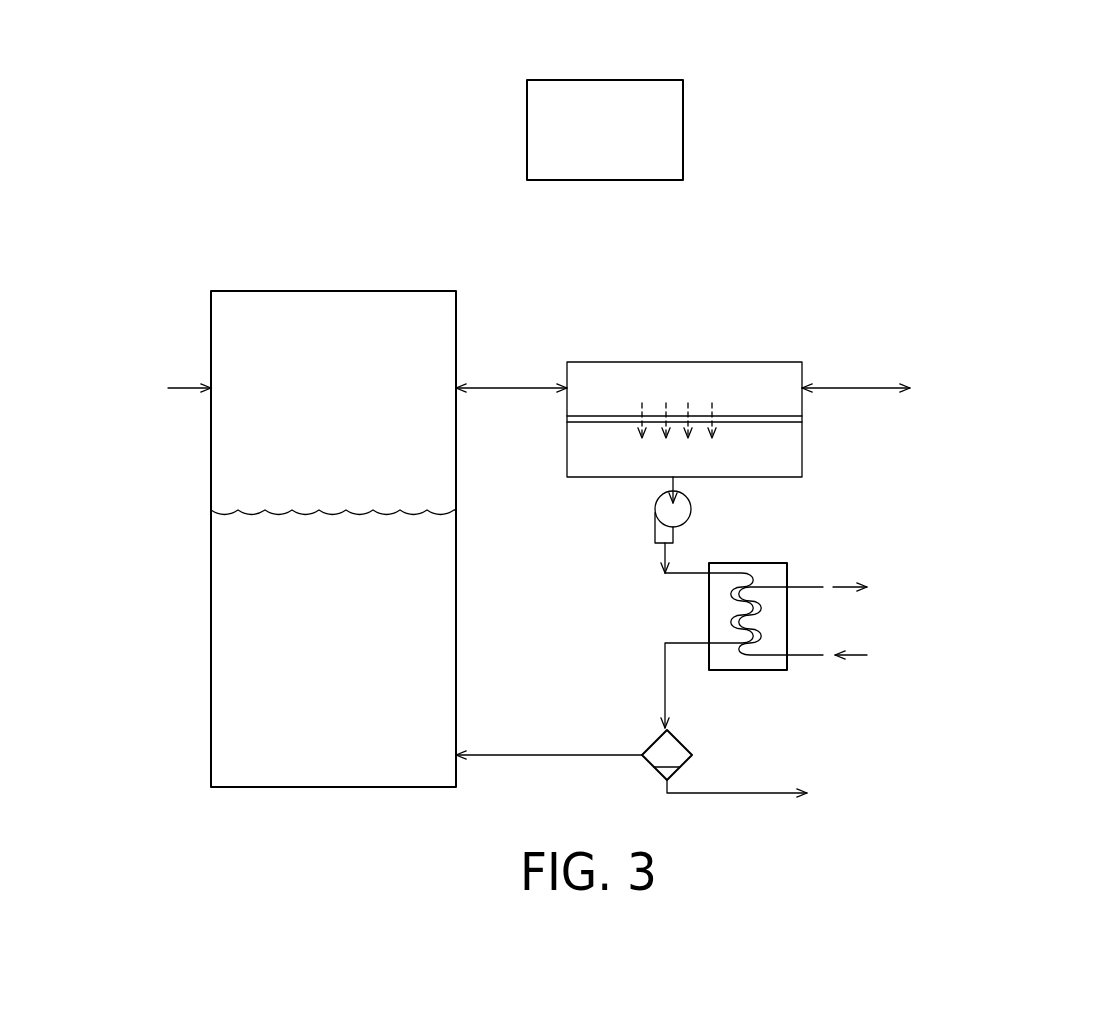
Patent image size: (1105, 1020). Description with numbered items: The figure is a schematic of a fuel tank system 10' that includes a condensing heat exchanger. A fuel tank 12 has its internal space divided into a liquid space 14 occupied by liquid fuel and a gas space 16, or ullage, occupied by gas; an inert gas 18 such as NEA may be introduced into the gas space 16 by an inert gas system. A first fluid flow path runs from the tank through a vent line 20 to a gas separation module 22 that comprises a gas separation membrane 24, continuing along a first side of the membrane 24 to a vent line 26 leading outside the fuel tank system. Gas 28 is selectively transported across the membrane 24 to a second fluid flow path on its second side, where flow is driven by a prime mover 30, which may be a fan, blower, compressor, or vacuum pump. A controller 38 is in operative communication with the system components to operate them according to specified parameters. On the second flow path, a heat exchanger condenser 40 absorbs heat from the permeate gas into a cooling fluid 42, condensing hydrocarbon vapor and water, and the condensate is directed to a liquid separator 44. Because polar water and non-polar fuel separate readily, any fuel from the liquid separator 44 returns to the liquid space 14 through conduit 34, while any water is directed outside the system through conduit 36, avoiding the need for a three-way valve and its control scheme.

The fuel tank system 10' is at (1031, 82).
The fuel tank 12 is at (395, 290).
The liquid space 14 is at (265, 657).
The gas space 16 is at (313, 318).
The inert gas 18 is at (183, 387).
The vent line 20 is at (505, 387).
The gas separation module 22 is at (617, 361).
The gas separation membrane 24 is at (740, 416).
The vent line 26 is at (857, 385).
The gas 28 is at (688, 410).
The prime mover 30 is at (692, 510).
The conduit 34 is at (542, 753).
The conduit 36 is at (768, 795).
The controller 38 is at (527, 123).
The heat exchanger condenser 40 is at (786, 562).
The cooling fluid 42 is at (846, 590).
The liquid separator 44 is at (677, 737).